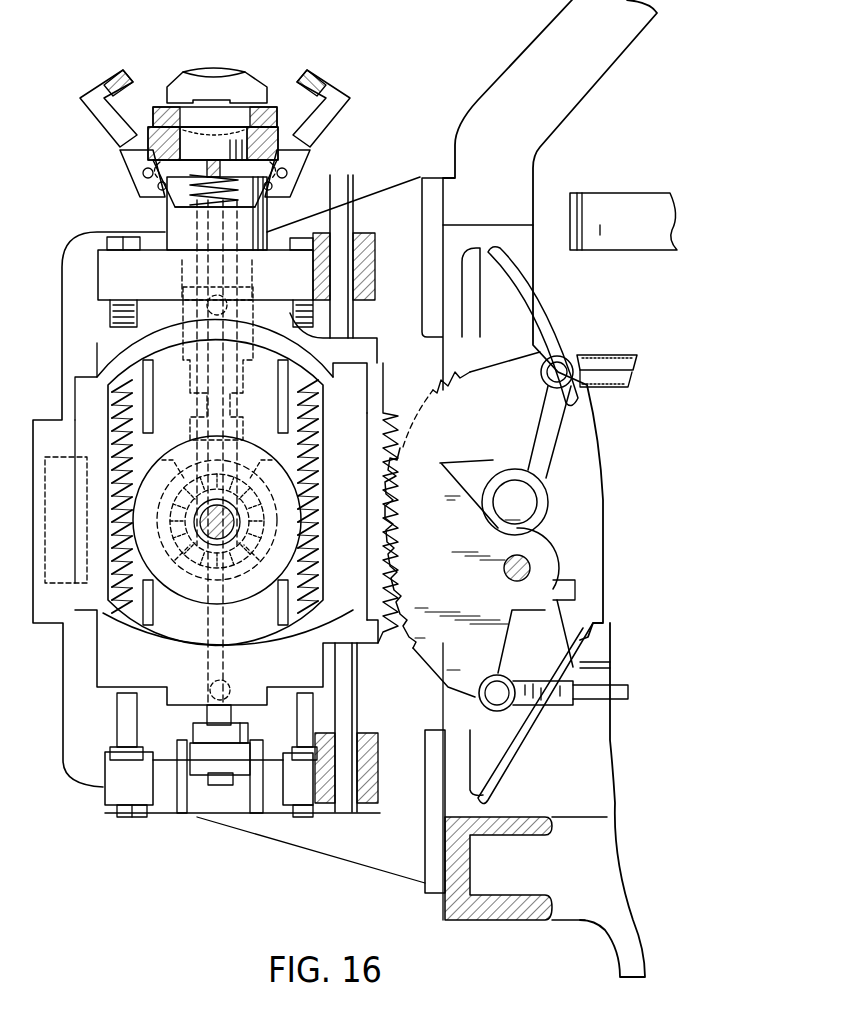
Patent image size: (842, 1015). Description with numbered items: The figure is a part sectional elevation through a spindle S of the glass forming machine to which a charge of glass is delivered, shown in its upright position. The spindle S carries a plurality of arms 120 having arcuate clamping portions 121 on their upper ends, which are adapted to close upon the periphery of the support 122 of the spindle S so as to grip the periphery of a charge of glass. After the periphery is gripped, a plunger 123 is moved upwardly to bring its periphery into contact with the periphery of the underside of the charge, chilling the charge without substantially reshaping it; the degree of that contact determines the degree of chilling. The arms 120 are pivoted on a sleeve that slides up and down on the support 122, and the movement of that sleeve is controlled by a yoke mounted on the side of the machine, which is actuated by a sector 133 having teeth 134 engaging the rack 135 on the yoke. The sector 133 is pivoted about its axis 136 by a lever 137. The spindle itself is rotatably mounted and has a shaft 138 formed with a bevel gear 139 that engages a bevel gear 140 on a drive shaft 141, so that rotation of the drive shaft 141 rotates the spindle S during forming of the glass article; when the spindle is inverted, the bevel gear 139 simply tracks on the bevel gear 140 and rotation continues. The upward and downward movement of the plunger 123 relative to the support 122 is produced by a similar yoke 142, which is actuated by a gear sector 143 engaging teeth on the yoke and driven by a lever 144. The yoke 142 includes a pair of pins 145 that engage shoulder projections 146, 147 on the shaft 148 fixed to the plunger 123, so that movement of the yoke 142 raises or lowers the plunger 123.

The spindle S is at (118, 194).
The arms 120 is at (97, 127).
The arcuate clamping portions 121 is at (318, 75).
The support 122 is at (273, 117).
The plunger 123 is at (193, 143).
The sector 133 is at (440, 637).
The teeth 134 is at (436, 466).
The rack 135 is at (388, 588).
The axis 136 is at (527, 560).
The lever 137 is at (612, 692).
The shaft 138 is at (200, 421).
The bevel gear 139 is at (190, 485).
The bevel gear 140 is at (180, 552).
The drive shaft 141 is at (223, 530).
The yoke 142 is at (120, 784).
The gear sector 143 is at (470, 388).
The lever 144 is at (610, 363).
The pins 145 is at (188, 757).
The shoulder projection 146 is at (242, 735).
The shoulder projection 147 is at (203, 772).
The shaft 148 is at (212, 710).